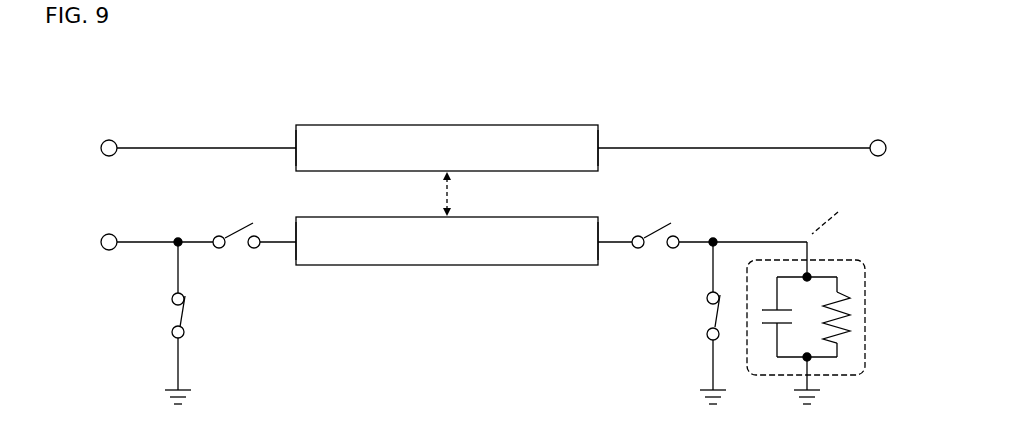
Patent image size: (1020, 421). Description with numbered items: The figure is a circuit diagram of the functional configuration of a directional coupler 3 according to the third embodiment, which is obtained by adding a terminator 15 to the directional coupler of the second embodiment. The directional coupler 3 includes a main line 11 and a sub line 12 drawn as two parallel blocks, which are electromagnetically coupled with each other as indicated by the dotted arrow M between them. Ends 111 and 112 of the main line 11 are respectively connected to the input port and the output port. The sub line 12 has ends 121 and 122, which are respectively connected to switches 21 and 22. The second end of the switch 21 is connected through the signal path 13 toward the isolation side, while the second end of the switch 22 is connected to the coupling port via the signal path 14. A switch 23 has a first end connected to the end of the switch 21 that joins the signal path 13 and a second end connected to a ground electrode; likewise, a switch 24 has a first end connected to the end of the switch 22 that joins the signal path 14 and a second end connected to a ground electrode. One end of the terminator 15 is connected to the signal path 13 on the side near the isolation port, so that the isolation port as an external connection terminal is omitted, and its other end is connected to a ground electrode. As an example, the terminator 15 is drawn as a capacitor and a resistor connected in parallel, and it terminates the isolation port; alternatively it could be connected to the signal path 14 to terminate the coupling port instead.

The directional coupler 3 is at (860, 77).
The main line 11 is at (398, 125).
The sub line 12 is at (398, 217).
The end of main line 111 is at (296, 146).
The end of main line 112 is at (599, 146).
The end of sub line 121 is at (599, 238).
The end of sub line 122 is at (296, 238).
The signal path 13 is at (762, 242).
The signal path 14 is at (155, 240).
The terminator 15 is at (866, 314).
The switch 21 is at (656, 229).
The switch 22 is at (238, 228).
The switch 23 is at (712, 318).
The switch 24 is at (185, 313).
The dotted arrow M is at (448, 205).